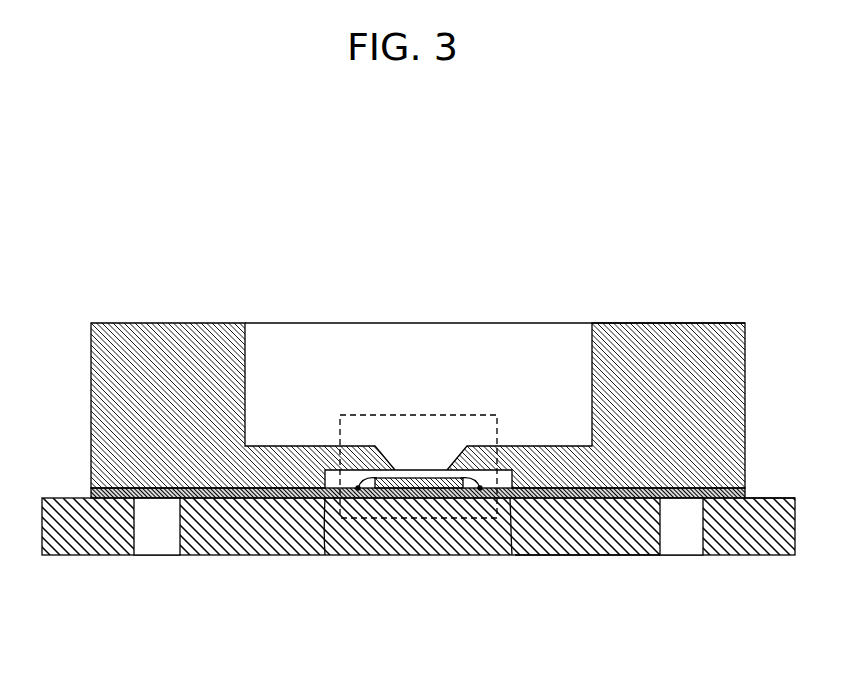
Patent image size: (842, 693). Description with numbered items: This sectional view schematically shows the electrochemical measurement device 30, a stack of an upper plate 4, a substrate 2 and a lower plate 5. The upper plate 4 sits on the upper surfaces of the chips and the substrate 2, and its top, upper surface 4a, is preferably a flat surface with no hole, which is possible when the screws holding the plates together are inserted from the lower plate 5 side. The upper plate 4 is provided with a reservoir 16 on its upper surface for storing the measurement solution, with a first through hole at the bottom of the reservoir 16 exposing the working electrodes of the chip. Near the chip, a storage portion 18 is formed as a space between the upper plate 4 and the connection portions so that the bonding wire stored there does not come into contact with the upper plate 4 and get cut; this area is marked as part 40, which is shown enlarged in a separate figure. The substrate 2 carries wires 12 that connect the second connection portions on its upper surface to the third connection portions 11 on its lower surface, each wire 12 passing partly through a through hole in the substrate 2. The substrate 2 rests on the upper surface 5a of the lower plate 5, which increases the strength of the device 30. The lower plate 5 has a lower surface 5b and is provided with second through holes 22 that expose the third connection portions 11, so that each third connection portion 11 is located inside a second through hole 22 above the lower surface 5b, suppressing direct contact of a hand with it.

The electrochemical measurement device 30 is at (692, 195).
The upper plate 4 is at (710, 337).
The upper surface of upper plate 4a is at (643, 323).
The reservoir 16 is at (308, 342).
The part 40 is at (450, 415).
The substrate 2 is at (90, 492).
The lower plate 5 is at (753, 552).
The upper surface of lower plate 5a is at (760, 501).
The lower surface of lower plate 5b is at (620, 556).
The third connection portion 11 is at (155, 500).
The second through hole 22 is at (683, 542).
The wire 12 is at (322, 499).
The storage portion 18 is at (517, 555).